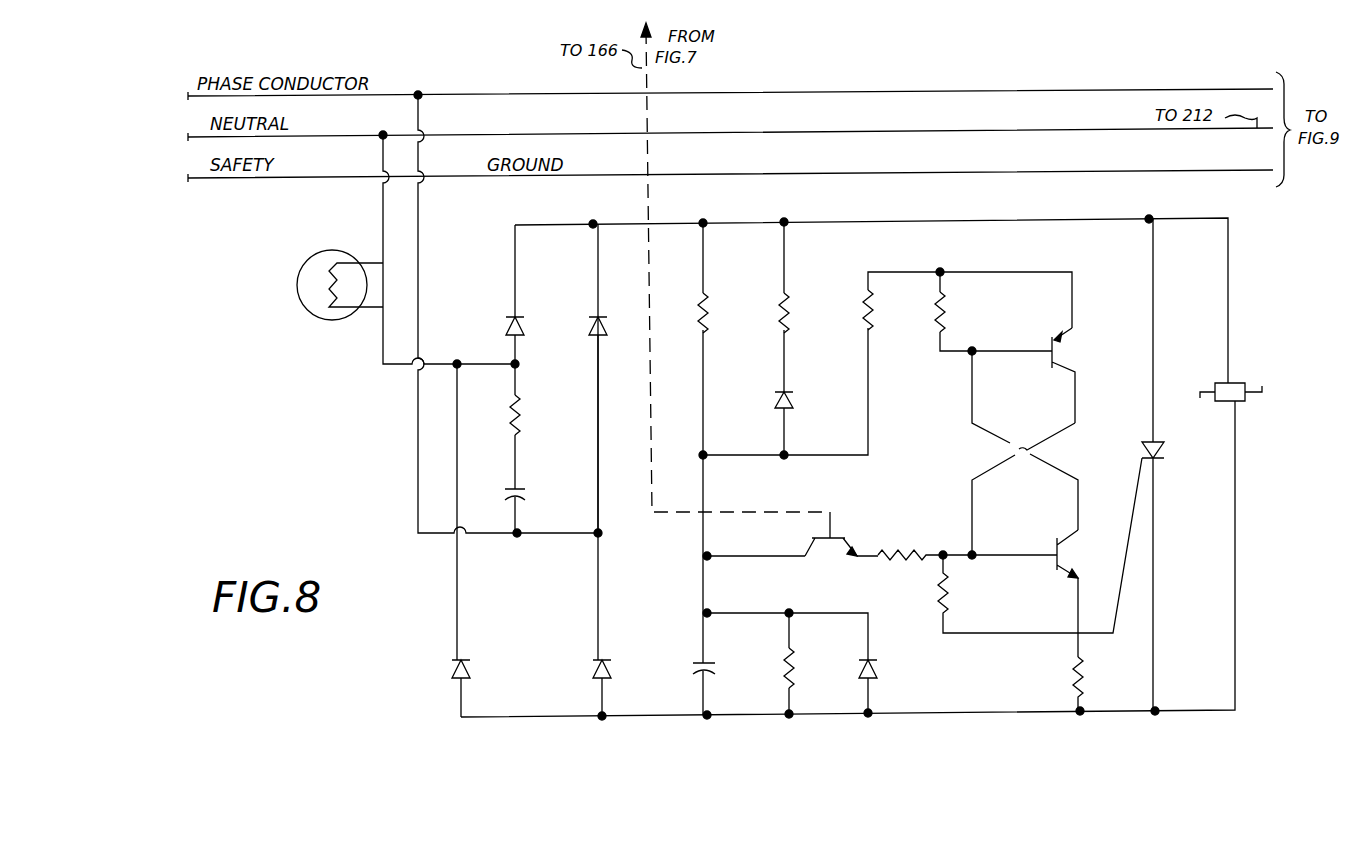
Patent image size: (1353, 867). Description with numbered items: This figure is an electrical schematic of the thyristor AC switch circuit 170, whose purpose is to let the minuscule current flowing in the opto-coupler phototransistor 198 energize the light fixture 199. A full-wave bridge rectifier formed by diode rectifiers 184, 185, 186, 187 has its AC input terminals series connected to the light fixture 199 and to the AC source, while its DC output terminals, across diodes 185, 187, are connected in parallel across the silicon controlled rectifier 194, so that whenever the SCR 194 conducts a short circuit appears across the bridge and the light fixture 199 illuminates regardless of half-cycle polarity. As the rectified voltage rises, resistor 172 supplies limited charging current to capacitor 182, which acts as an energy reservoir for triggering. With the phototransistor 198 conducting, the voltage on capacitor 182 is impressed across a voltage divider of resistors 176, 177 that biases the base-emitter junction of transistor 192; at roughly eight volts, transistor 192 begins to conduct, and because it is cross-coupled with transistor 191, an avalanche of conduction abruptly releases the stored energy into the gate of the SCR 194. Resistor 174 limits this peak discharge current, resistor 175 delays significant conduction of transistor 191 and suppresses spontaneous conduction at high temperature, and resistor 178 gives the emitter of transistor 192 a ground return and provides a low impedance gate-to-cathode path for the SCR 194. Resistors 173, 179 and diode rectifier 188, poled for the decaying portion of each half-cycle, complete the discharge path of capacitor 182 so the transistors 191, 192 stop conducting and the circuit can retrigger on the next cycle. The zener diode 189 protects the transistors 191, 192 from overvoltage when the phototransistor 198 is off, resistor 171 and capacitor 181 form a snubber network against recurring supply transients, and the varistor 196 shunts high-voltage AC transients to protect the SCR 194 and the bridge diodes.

The thyristor AC switch circuit 170 is at (312, 471).
The resistor 171 is at (524, 418).
The resistor 172 is at (710, 306).
The resistor 173 is at (790, 306).
The resistor 174 is at (873, 317).
The resistor 175 is at (948, 314).
The resistor 176 is at (880, 560).
The resistor 177 is at (956, 602).
The resistor 178 is at (1070, 672).
The resistor 179 is at (782, 678).
The capacitor 181 is at (522, 490).
The capacitor 182 is at (714, 663).
The diode rectifier 184 is at (508, 328).
The diode rectifier 185 is at (592, 319).
The diode rectifier 186 is at (466, 659).
The diode rectifier 187 is at (606, 658).
The diode rectifier 188 is at (796, 398).
The zener diode 189 is at (875, 657).
The transistor 191 is at (1048, 358).
The transistor 192 is at (1050, 540).
The silicon controlled rectifier 194 is at (1149, 440).
The varistor 196 is at (1242, 382).
The opto-coupler phototransistor 198 is at (846, 533).
The light fixture 199 is at (331, 318).